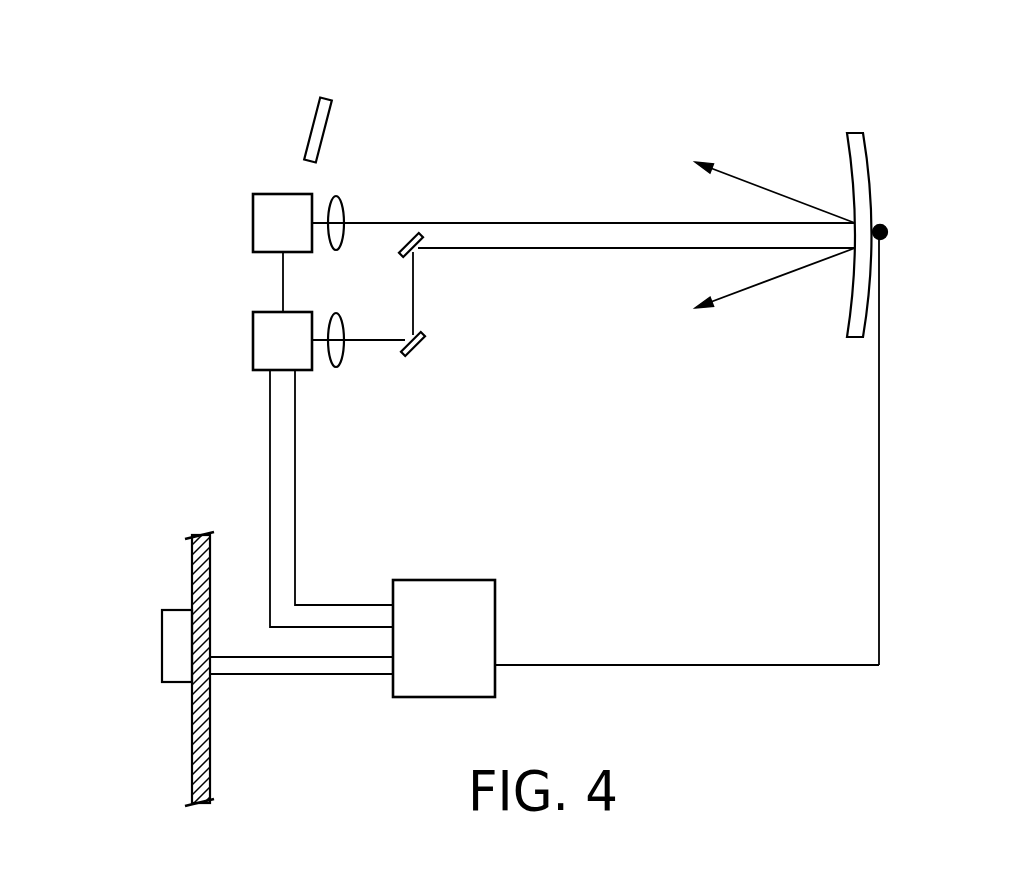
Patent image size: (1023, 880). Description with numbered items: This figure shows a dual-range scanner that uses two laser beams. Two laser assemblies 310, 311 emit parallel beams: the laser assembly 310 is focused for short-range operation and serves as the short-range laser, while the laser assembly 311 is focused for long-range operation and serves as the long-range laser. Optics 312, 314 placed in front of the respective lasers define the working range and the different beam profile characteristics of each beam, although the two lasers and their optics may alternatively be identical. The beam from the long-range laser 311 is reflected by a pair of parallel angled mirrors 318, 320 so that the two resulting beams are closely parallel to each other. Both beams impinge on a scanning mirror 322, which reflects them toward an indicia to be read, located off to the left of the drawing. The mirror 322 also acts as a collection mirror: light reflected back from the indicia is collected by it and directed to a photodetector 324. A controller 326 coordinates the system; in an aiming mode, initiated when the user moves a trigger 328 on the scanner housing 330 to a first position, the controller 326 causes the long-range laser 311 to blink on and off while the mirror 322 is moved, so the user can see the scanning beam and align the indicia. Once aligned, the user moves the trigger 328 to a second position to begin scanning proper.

The laser assembly 310 is at (253, 223).
The laser assembly 311 is at (253, 340).
The optics 312 is at (339, 203).
The optics 314 is at (339, 362).
The first mirror 318 is at (425, 352).
The second mirror (beam splitter) 320 is at (405, 243).
The scanning mirror 322 is at (900, 152).
The photodetector 324 is at (310, 128).
The controller 326 is at (495, 622).
The trigger 328 is at (162, 645).
The scanner housing 330 is at (192, 757).